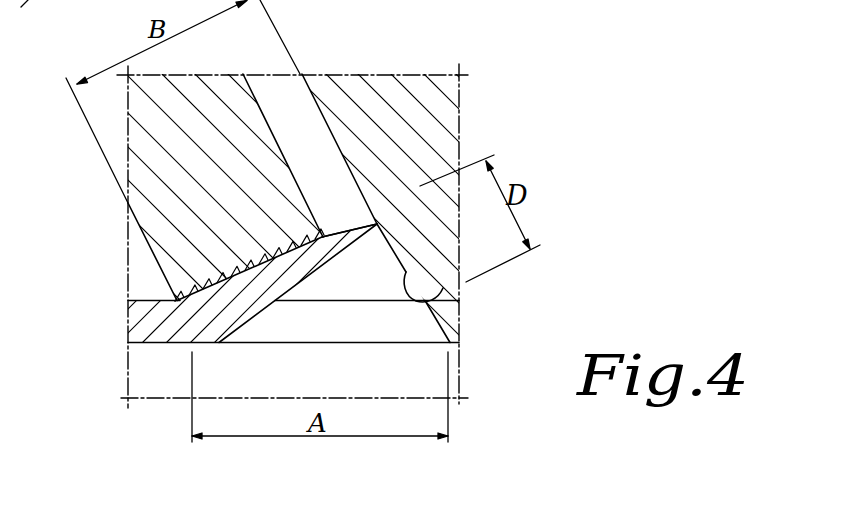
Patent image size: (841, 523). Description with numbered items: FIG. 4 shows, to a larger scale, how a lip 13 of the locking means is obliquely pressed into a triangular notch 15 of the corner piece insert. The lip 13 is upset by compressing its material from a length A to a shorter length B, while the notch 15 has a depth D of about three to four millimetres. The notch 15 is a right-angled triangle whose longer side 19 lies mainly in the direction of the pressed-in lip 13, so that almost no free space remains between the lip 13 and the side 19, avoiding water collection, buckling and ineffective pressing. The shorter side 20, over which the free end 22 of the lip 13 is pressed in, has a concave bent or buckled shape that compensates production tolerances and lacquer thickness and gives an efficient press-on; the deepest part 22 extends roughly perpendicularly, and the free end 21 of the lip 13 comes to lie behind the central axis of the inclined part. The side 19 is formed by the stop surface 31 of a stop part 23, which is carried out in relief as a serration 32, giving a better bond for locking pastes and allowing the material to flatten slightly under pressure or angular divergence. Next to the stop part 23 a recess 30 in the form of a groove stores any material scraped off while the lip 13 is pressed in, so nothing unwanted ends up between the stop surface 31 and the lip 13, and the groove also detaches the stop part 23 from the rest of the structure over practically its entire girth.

The lip 13 is at (293, 276).
The notch 15 is at (362, 320).
The side 19 is at (160, 322).
The side 20 is at (443, 297).
The free end 21 is at (377, 222).
The free end 22 is at (397, 225).
The stop part 23 is at (150, 207).
The recess 30 is at (282, 95).
The stop surface 31 is at (259, 276).
The serration 32 is at (220, 273).